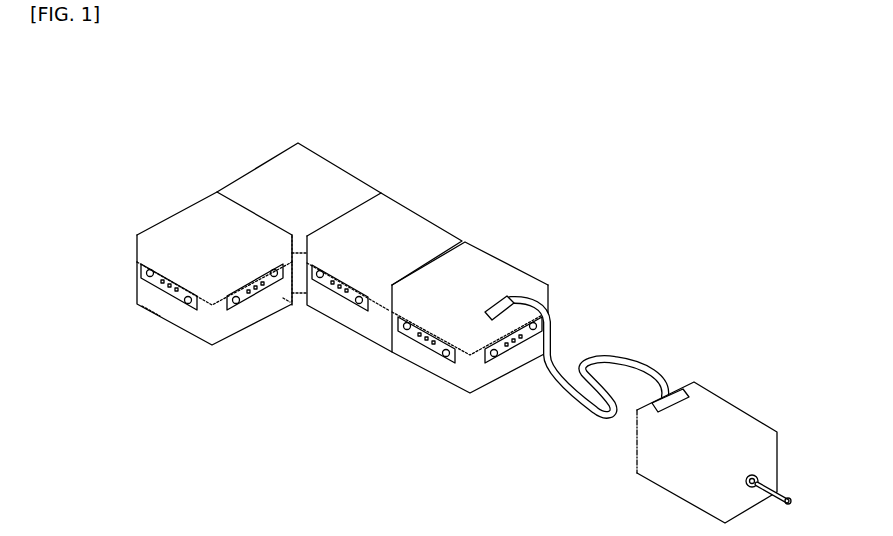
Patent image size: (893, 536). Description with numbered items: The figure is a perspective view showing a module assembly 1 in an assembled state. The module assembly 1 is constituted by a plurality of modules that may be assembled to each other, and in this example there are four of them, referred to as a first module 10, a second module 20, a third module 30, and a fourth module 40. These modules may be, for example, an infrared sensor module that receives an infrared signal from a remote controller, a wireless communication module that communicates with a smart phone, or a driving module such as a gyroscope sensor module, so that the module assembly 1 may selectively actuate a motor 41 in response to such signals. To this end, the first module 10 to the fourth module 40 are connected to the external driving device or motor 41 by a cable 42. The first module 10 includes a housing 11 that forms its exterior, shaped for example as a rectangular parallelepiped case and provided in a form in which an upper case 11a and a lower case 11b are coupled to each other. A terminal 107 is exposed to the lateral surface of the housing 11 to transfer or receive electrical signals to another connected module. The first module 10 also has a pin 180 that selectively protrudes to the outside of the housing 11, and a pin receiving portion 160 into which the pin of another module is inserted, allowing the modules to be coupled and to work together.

The module assembly 1 is at (364, 83).
The first module 10 is at (171, 270).
The second module 20 is at (346, 152).
The third module 30 is at (436, 200).
The fourth module 40 is at (520, 250).
The housing 11 is at (171, 268).
The upper case 11a is at (137, 248).
The lower case 11b is at (189, 303).
The terminal 107 is at (241, 310).
The pin receiving portion 160 is at (281, 307).
The pin 180 is at (143, 304).
The motor 41 is at (737, 394).
The cable 42 is at (636, 364).